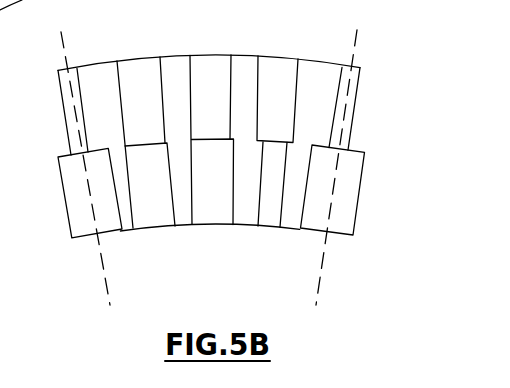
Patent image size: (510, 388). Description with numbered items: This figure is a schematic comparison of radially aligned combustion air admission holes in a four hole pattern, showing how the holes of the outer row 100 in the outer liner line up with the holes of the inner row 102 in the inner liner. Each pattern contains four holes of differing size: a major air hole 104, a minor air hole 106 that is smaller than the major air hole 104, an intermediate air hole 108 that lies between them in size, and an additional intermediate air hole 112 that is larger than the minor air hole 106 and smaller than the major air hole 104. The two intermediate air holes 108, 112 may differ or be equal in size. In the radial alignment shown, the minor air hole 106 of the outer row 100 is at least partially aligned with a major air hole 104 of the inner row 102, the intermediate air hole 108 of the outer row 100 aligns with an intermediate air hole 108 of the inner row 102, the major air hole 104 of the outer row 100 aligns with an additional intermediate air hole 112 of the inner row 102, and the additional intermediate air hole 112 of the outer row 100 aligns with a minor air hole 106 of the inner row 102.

The outer row 100 is at (402, 124).
The inner row 102 is at (388, 204).
The major air hole 104 is at (241, 72).
The minor air hole 106 is at (84, 97).
The intermediate air hole 108 is at (159, 77).
The additional intermediate air hole 112 is at (301, 85).